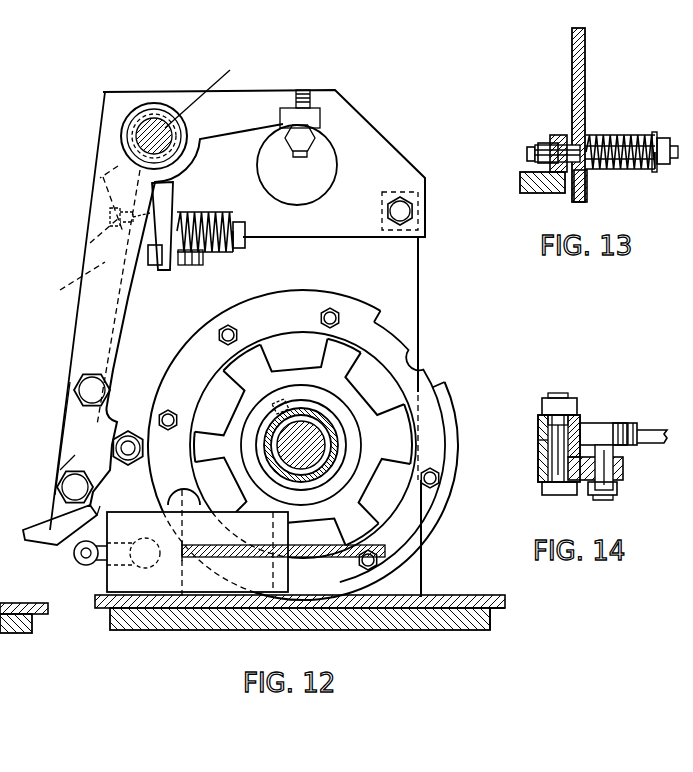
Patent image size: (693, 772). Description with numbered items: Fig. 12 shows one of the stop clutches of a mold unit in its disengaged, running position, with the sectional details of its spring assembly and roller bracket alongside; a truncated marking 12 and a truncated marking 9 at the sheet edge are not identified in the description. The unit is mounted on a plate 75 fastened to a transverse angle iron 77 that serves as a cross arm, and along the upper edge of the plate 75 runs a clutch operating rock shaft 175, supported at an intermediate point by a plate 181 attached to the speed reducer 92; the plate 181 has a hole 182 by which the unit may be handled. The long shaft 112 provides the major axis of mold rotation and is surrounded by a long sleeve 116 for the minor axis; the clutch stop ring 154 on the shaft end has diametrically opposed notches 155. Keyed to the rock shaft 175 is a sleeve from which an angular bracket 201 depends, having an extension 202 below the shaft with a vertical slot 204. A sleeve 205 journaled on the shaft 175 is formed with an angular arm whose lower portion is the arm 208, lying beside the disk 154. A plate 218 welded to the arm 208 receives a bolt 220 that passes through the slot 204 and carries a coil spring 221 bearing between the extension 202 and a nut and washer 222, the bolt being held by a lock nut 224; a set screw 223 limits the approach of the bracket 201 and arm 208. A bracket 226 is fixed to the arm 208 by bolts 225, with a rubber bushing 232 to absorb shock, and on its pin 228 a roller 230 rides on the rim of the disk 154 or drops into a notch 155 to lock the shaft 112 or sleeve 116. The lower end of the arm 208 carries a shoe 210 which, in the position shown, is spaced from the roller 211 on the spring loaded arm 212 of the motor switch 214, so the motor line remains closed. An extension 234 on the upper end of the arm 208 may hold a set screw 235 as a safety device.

In FIG. 12, the frame 9 is at (2, 342).
In FIG. 12, the frame member 12 is at (7, 393).
In FIG. 12, the plate 75 is at (486, 622).
In FIG. 12, the transverse angle iron 77 is at (428, 610).
In FIG. 12, the speed reducer 92 is at (414, 290).
In FIG. 12, the long shaft 112 is at (340, 430).
In FIG. 12, the long sleeve 116 is at (322, 440).
In FIG. 12, the clutch stop ring 154 is at (393, 345).
In FIG. 14, the clutch stop ring 154 is at (652, 443).
In FIG. 12, the notches 155 is at (418, 364).
In FIG. 12, the clutch operating rock shaft 175 is at (209, 93).
In FIG. 12, the plate 181 is at (388, 175).
In FIG. 12, the hole 182 is at (333, 150).
In FIG. 12, the angular bracket 201 is at (68, 278).
In FIG. 12, the extension 202 is at (176, 196).
In FIG. 13, the extension 202 is at (580, 128).
In FIG. 12, the vertical slot 204 is at (148, 214).
In FIG. 13, the vertical slot 204 is at (585, 180).
In FIG. 12, the sleeve 205 is at (178, 128).
In FIG. 12, the arm 208 is at (100, 292).
In FIG. 13, the arm 208 is at (538, 193).
In FIG. 14, the arm 208 is at (540, 440).
In FIG. 12, the shoe 210 is at (38, 540).
In FIG. 12, the roller 211 is at (88, 566).
In FIG. 12, the spring loaded arm 212 is at (148, 565).
In FIG. 12, the switch 214 is at (172, 596).
In FIG. 12, the plate 218 is at (155, 266).
In FIG. 13, the plate 218 is at (558, 137).
In FIG. 13, the bolt 220 is at (630, 140).
In FIG. 12, the coil spring 221 is at (222, 222).
In FIG. 13, the coil spring 221 is at (612, 170).
In FIG. 13, the nut and washer 222 is at (664, 170).
In FIG. 12, the set screw 223 is at (200, 265).
In FIG. 13, the lock nut 224 is at (540, 145).
In FIG. 12, the bolts 225 is at (100, 384).
In FIG. 14, the bolts 225 is at (558, 495).
In FIG. 12, the bracket 226 is at (72, 437).
In FIG. 14, the bracket 226 is at (540, 474).
In FIG. 12, the pin 228 is at (129, 440).
In FIG. 14, the pin 228 is at (614, 474).
In FIG. 12, the roller 230 is at (106, 474).
In FIG. 14, the roller 230 is at (608, 425).
In FIG. 14, the rubber bushing 232 is at (540, 433).
In FIG. 12, the extension 234 is at (265, 108).
In FIG. 12, the set screw 235 is at (312, 102).